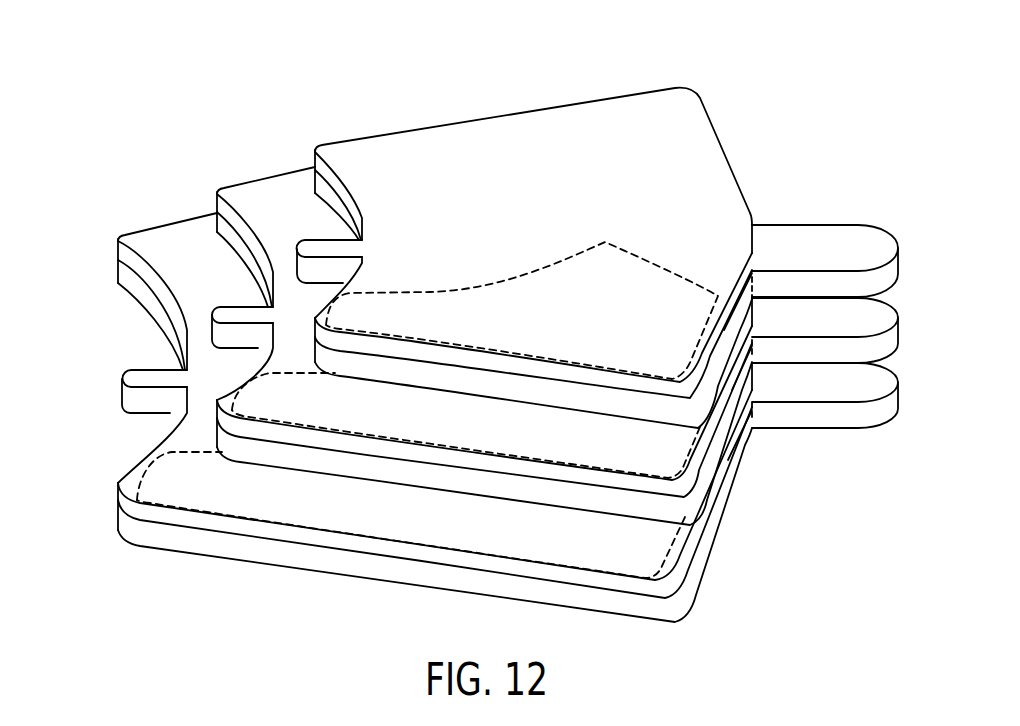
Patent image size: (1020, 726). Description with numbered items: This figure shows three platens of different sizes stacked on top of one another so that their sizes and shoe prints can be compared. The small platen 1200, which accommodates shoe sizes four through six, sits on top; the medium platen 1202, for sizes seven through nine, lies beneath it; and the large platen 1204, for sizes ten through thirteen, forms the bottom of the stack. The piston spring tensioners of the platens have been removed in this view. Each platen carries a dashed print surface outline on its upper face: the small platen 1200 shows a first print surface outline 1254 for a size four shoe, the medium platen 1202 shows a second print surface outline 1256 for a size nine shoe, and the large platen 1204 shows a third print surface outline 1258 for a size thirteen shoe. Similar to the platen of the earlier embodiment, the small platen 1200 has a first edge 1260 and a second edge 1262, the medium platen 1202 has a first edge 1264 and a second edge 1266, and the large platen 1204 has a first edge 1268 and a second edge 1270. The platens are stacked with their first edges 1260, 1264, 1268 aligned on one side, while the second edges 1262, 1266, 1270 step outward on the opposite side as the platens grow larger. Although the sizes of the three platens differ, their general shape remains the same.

The small platen 1200 is at (371, 110).
The medium platen 1202 is at (259, 156).
The large platen 1204 is at (146, 206).
The first print surface outline 1254 is at (428, 290).
The second print surface outline 1256 is at (253, 370).
The third print surface outline 1258 is at (168, 452).
The first edge 1260 is at (715, 372).
The first edge 1264 is at (700, 470).
The first edge 1268 is at (690, 567).
The second edge 1262 is at (326, 194).
The second edge 1266 is at (220, 235).
The second edge 1270 is at (140, 298).